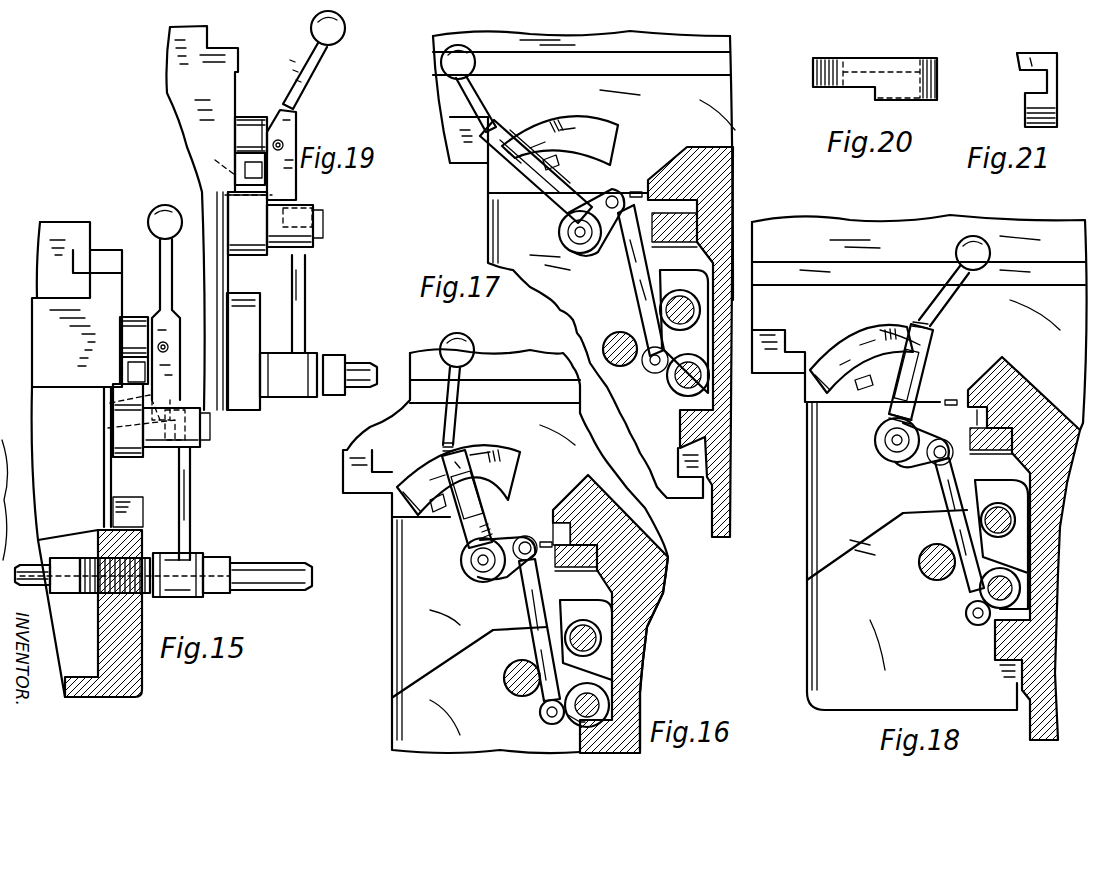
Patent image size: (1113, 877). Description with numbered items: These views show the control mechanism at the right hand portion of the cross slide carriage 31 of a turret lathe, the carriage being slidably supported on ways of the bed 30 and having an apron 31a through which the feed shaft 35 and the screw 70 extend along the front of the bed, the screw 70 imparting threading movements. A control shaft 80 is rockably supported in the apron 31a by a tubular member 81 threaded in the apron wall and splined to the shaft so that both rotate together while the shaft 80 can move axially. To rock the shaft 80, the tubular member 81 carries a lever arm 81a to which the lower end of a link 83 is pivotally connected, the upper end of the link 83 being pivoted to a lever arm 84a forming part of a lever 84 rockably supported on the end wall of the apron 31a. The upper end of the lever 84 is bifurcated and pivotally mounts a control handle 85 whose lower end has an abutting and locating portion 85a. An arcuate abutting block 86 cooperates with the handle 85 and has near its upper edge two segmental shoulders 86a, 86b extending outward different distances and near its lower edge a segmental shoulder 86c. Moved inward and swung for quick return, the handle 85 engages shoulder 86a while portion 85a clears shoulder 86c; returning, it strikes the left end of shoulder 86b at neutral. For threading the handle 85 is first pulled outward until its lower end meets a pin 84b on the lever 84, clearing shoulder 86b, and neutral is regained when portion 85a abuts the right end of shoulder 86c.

In FIG. 17, the bed 30 is at (730, 497).
In FIG. 16, the bed 30 is at (655, 585).
In FIG. 18, the bed 30 is at (1035, 720).
In FIG. 15, the cross slide carriage 31 is at (32, 318).
In FIG. 19, the cross slide carriage 31 is at (185, 133).
In FIG. 17, the cross slide carriage 31 is at (442, 97).
In FIG. 18, the cross slide carriage 31 is at (805, 345).
In FIG. 15, the apron 31a is at (138, 690).
In FIG. 19, the apron 31a is at (240, 400).
In FIG. 17, the apron 31a is at (488, 238).
In FIG. 16, the apron 31a is at (393, 665).
In FIG. 18, the apron 31a is at (812, 655).
In FIG. 17, the feed shaft 35 is at (618, 345).
In FIG. 16, the feed shaft 35 is at (515, 685).
In FIG. 18, the feed shaft 35 is at (925, 572).
In FIG. 17, the screw 70 is at (688, 308).
In FIG. 16, the screw 70 is at (598, 640).
In FIG. 18, the screw 70 is at (1008, 518).
In FIG. 15, the control shaft 80 is at (270, 565).
In FIG. 19, the control shaft 80 is at (355, 365).
In FIG. 17, the control shaft 80 is at (680, 383).
In FIG. 16, the control shaft 80 is at (600, 705).
In FIG. 18, the control shaft 80 is at (1005, 585).
In FIG. 15, the tubular member 81 is at (85, 590).
In FIG. 19, the tubular member 81 is at (262, 398).
In FIG. 16, the tubular member 81 is at (572, 718).
In FIG. 15, the lever arm 81a is at (192, 565).
In FIG. 19, the lever arm 81a is at (305, 360).
In FIG. 16, the lever arm 81a is at (553, 705).
In FIG. 18, the lever arm 81a is at (985, 624).
In FIG. 15, the link 83 is at (190, 486).
In FIG. 19, the link 83 is at (300, 292).
In FIG. 16, the link 83 is at (533, 592).
In FIG. 18, the link 83 is at (960, 518).
In FIG. 15, the lever 84 is at (175, 395).
In FIG. 19, the lever 84 is at (290, 170).
In FIG. 16, the lever 84 is at (462, 550).
In FIG. 18, the lever 84 is at (925, 387).
In FIG. 19, the lever arm 84a is at (305, 206).
In FIG. 16, the lever arm 84a is at (512, 543).
In FIG. 18, the lever arm 84a is at (920, 458).
In FIG. 15, the pin 84b is at (110, 404).
In FIG. 19, the pin 84b is at (217, 171).
In FIG. 15, the control handle 85 is at (158, 258).
In FIG. 19, the control handle 85 is at (318, 78).
In FIG. 17, the control handle 85 is at (470, 92).
In FIG. 16, the control handle 85 is at (450, 423).
In FIG. 18, the control handle 85 is at (948, 292).
In FIG. 15, the abutting and locating portion 85a is at (108, 430).
In FIG. 19, the abutting and locating portion 85a is at (300, 198).
In FIG. 15, the arcuate abutting block 86 is at (128, 317).
In FIG. 19, the arcuate abutting block 86 is at (247, 117).
In FIG. 17, the arcuate abutting block 86 is at (612, 160).
In FIG. 16, the arcuate abutting block 86 is at (508, 475).
In FIG. 18, the arcuate abutting block 86 is at (880, 387).
In FIG. 20, the arcuate abutting block 86 is at (900, 62).
In FIG. 21, the arcuate abutting block 86 is at (1058, 70).
In FIG. 17, the segmental shoulder 86a is at (520, 147).
In FIG. 16, the segmental shoulder 86a is at (420, 475).
In FIG. 18, the segmental shoulder 86a is at (840, 350).
In FIG. 20, the segmental shoulder 86a is at (842, 87).
In FIG. 19, the segmental shoulder 86b is at (268, 112).
In FIG. 17, the segmental shoulder 86b is at (585, 125).
In FIG. 16, the segmental shoulder 86b is at (500, 457).
In FIG. 18, the segmental shoulder 86b is at (887, 333).
In FIG. 20, the segmental shoulder 86b is at (920, 100).
In FIG. 21, the segmental shoulder 86b is at (1020, 62).
In FIG. 17, the segmental shoulder 86c is at (557, 163).
In FIG. 16, the segmental shoulder 86c is at (437, 505).
In FIG. 18, the segmental shoulder 86c is at (862, 390).